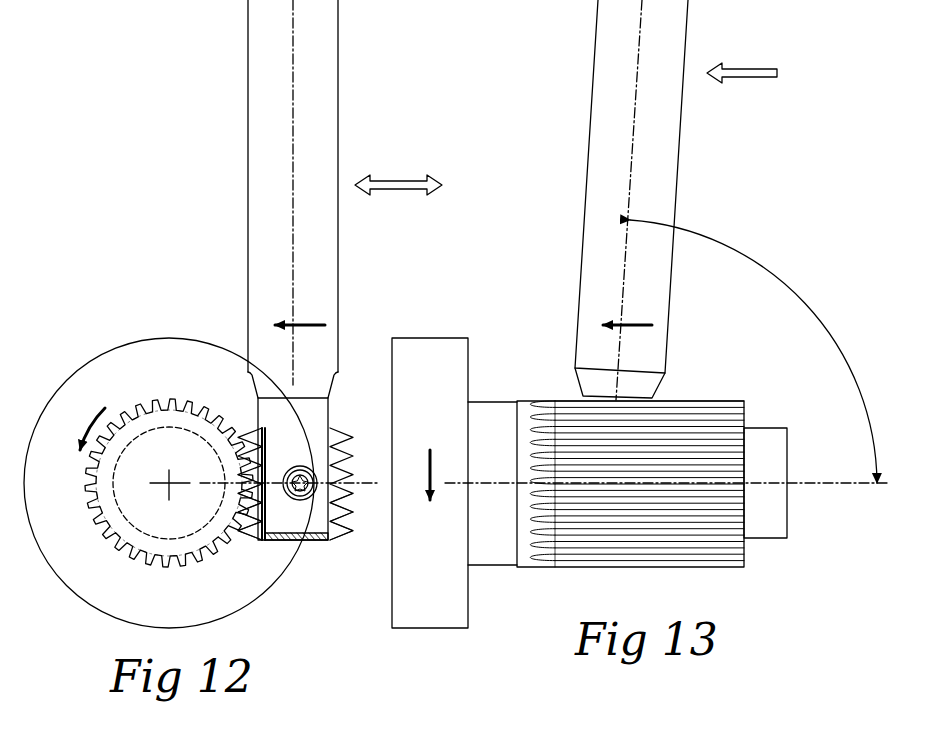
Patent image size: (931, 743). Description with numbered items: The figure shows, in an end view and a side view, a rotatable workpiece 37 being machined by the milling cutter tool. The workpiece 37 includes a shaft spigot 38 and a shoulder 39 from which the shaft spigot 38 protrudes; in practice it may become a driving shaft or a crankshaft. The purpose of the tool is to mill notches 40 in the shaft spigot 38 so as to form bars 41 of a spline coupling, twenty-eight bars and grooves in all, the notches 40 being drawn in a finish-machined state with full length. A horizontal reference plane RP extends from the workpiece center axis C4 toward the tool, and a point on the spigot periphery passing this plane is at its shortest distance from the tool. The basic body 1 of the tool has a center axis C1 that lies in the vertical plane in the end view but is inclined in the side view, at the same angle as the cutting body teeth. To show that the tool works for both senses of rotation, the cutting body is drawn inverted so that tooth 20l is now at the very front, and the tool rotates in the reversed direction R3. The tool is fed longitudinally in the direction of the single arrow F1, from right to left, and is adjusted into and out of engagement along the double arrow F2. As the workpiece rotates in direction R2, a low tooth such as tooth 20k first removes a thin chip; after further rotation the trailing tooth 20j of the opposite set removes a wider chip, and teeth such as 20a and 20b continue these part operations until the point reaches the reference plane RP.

In FIG. 13, the basic body 1 is at (678, 171).
In FIG. 12, the workpiece 37 is at (291, 610).
In FIG. 13, the shaft spigot 38 is at (500, 402).
In FIG. 12, the shoulder 39 is at (78, 571).
In FIG. 13, the shoulder 39 is at (470, 357).
In FIG. 12, the notches 40 is at (132, 405).
In FIG. 13, the notches 40 is at (713, 535).
In FIG. 12, the bars 41 is at (162, 400).
In FIG. 12, the tooth 20a is at (248, 430).
In FIG. 12, the tooth 20b is at (338, 432).
In FIG. 12, the trailing tooth 20j is at (346, 508).
In FIG. 12, the tooth 20k is at (237, 520).
In FIG. 12, the tooth 20l is at (345, 530).
In FIG. 12, the reference plane RP is at (348, 483).
In FIG. 12, the direction of rotation of the workpiece R2 is at (77, 428).
In FIG. 12, the direction of rotation of the tool R3 is at (297, 323).
In FIG. 13, the direction of rotation of the tool R3 is at (640, 323).
In FIG. 13, the feeding direction F1 is at (742, 60).
In FIG. 12, the adjustment direction F2 is at (398, 172).
In FIG. 12, the center axis of the basic body C1 is at (293, 122).
In FIG. 13, the center axis of the basic body C1 is at (637, 95).
In FIG. 12, the gear axis C4 is at (169, 483).
In FIG. 13, the gear axis C4 is at (830, 487).